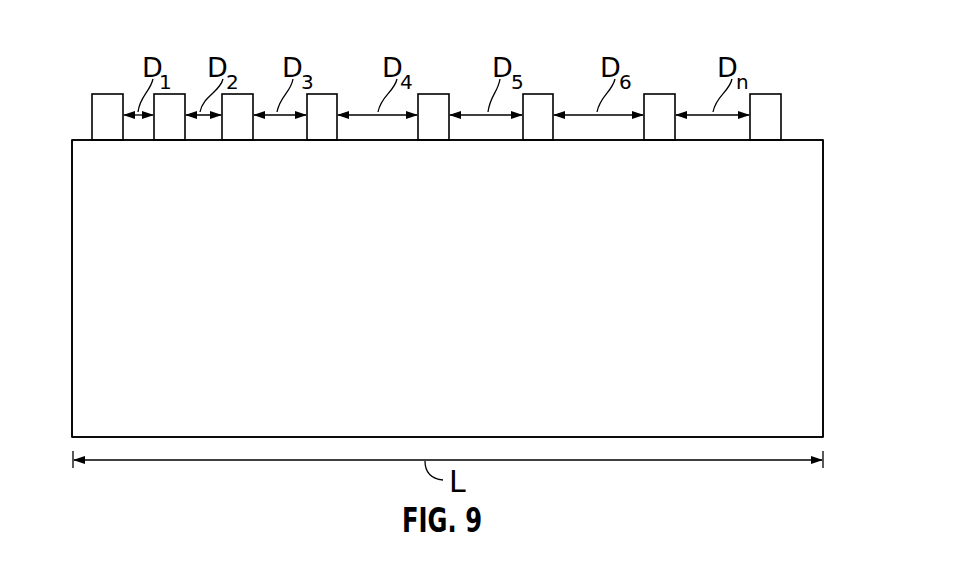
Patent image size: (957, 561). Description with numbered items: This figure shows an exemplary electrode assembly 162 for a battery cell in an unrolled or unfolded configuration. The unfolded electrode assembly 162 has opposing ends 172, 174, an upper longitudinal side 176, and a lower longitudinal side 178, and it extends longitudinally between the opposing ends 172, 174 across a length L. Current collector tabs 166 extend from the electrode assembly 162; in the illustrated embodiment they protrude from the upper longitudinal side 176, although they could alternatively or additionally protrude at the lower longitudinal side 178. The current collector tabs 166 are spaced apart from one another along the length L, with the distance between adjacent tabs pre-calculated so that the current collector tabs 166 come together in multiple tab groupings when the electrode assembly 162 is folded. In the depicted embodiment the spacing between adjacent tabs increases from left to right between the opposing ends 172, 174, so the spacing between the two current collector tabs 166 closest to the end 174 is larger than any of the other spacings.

The electrode assembly 162 is at (793, 258).
The current collector tabs 166 is at (102, 105).
The end 172 is at (72, 284).
The end 174 is at (823, 342).
The upper longitudinal side 176 is at (490, 140).
The lower longitudinal side 178 is at (330, 437).